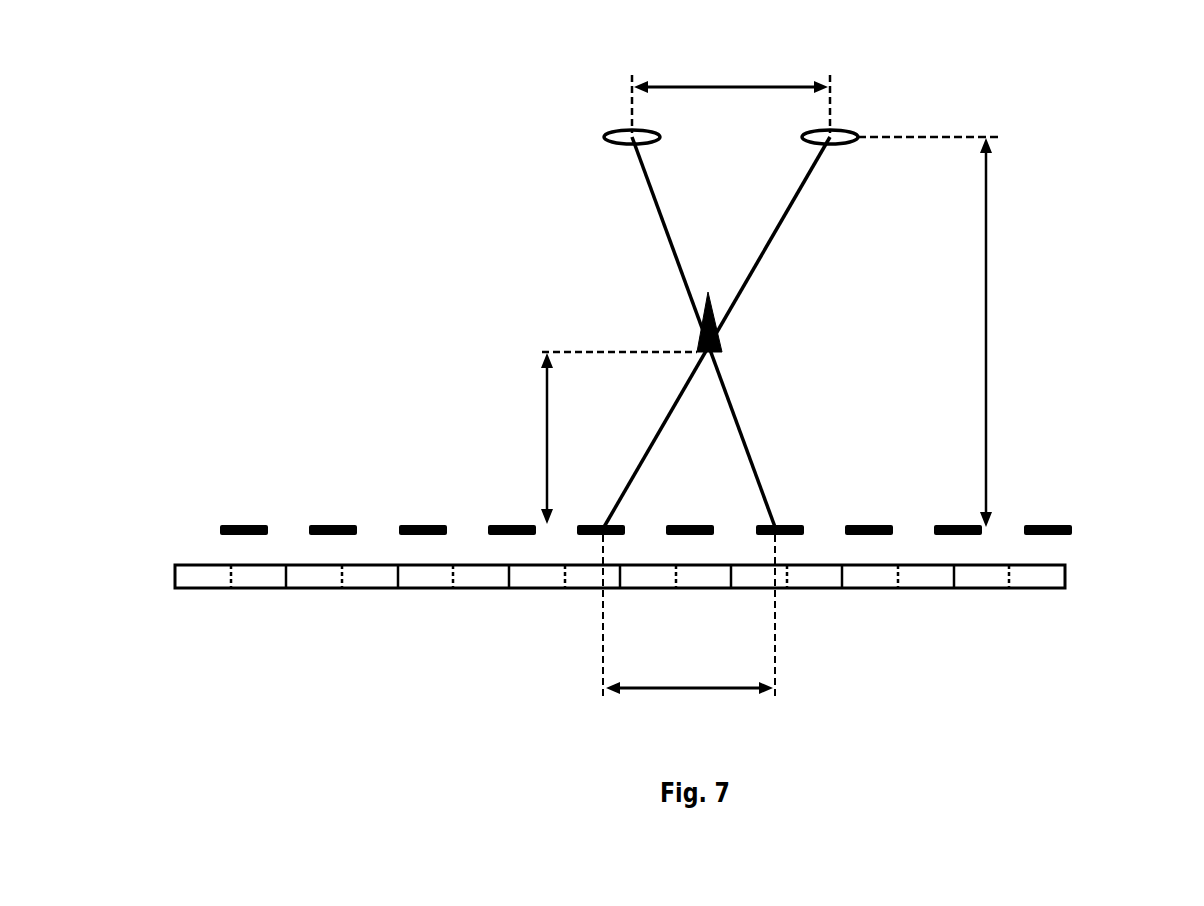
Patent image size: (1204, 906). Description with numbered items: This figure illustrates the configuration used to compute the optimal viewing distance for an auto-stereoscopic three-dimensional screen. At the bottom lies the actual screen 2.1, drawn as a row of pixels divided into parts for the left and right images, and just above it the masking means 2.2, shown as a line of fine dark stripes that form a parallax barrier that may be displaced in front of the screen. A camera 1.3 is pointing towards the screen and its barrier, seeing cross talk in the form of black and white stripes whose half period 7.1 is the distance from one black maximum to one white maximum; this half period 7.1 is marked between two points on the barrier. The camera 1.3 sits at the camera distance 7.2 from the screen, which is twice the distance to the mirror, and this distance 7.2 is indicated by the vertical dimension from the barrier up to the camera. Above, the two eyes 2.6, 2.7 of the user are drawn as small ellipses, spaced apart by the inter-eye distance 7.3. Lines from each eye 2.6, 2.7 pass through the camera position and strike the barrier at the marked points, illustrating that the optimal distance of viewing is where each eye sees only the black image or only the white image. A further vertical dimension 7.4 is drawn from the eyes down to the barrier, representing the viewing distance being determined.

The camera 1.3 is at (708, 292).
The screen 2.1 is at (1065, 576).
The masking means 2.2 is at (1088, 528).
The eye 2.6 is at (830, 130).
The eye 2.7 is at (633, 130).
The half period 7.1 is at (689, 617).
The camera distance 7.2 is at (601, 438).
The inter-eye distance 7.3 is at (731, 92).
The height of light sources above mask 7.4 is at (1006, 332).